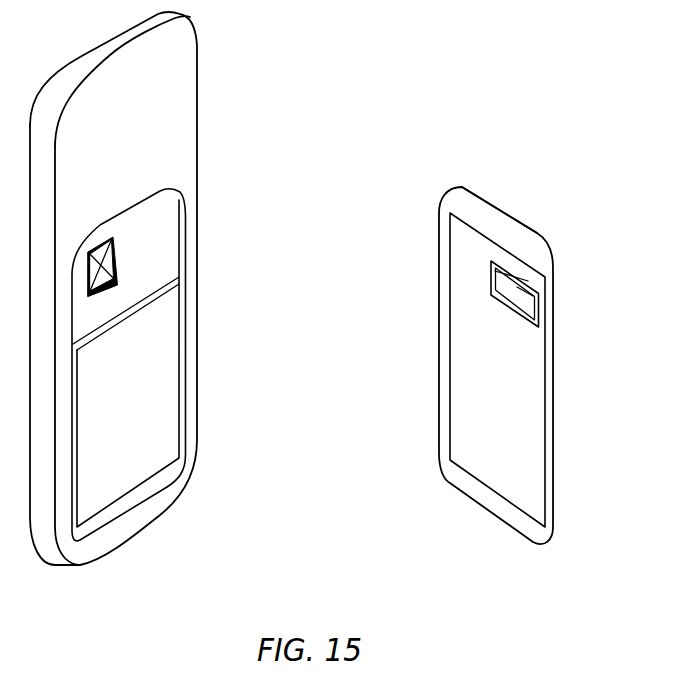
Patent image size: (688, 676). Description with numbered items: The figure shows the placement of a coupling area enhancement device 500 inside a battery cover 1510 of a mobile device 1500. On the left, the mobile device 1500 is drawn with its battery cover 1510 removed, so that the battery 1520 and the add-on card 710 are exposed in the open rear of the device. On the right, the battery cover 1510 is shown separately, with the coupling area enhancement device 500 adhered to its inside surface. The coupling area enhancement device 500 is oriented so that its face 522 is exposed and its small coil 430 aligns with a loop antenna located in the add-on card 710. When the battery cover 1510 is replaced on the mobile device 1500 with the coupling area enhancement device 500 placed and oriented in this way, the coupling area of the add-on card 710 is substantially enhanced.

The mobile device 1500 is at (197, 82).
The battery 1520 is at (167, 438).
The add-on card 710 is at (121, 290).
The coupling area enhancement device 500 is at (548, 421).
The battery cover 1510 is at (517, 214).
The face 522 is at (522, 470).
The small coil 430 is at (512, 310).